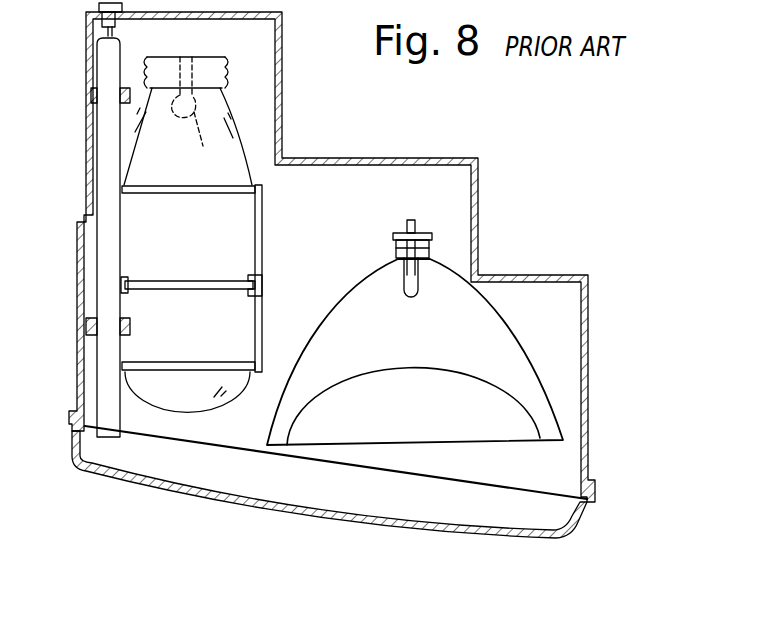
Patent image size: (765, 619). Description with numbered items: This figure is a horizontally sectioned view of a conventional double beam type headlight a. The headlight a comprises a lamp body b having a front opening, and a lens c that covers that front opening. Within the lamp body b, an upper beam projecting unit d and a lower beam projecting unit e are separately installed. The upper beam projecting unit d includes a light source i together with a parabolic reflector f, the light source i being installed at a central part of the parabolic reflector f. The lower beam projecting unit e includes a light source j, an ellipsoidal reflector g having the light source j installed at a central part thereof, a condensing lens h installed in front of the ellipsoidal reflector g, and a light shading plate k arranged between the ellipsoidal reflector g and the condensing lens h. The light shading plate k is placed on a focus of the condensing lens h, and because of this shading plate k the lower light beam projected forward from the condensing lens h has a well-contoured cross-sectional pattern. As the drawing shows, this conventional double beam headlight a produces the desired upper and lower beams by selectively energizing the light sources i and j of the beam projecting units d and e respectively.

The headlight a is at (591, 528).
The lamp body b is at (589, 377).
The lens c is at (177, 492).
The upper beam projecting unit d is at (515, 333).
The lower beam projecting unit e is at (240, 127).
The parabolic reflector f is at (533, 358).
The ellipsoidal reflector g is at (228, 107).
The condensing lens h is at (225, 393).
The light source i is at (418, 293).
The light source j is at (187, 111).
The light shading plate k is at (222, 281).